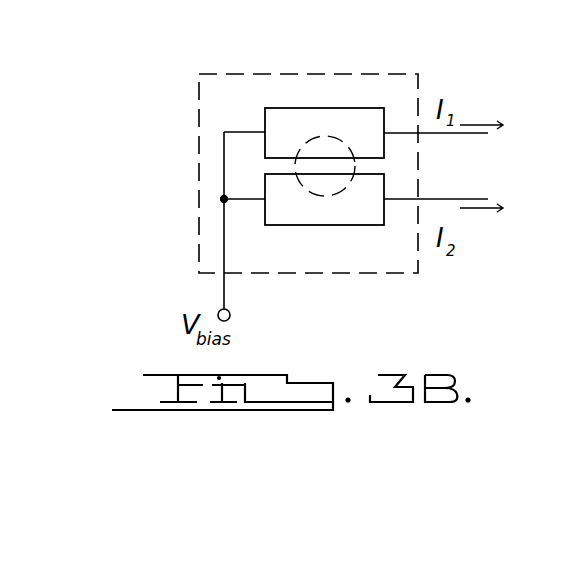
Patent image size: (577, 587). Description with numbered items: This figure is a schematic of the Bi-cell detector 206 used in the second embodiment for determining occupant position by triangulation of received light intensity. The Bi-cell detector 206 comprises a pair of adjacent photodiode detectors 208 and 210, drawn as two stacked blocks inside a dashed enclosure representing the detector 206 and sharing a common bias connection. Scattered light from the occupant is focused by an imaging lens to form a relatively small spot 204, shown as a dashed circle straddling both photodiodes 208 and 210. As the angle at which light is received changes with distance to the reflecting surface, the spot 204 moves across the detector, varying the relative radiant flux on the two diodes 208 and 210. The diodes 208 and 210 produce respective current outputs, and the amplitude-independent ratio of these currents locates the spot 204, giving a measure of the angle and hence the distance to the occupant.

The spot 204 is at (326, 205).
The Bi-cell detector 206 is at (196, 163).
The photodiode detector 208 is at (307, 100).
The photodiode detector 210 is at (288, 236).